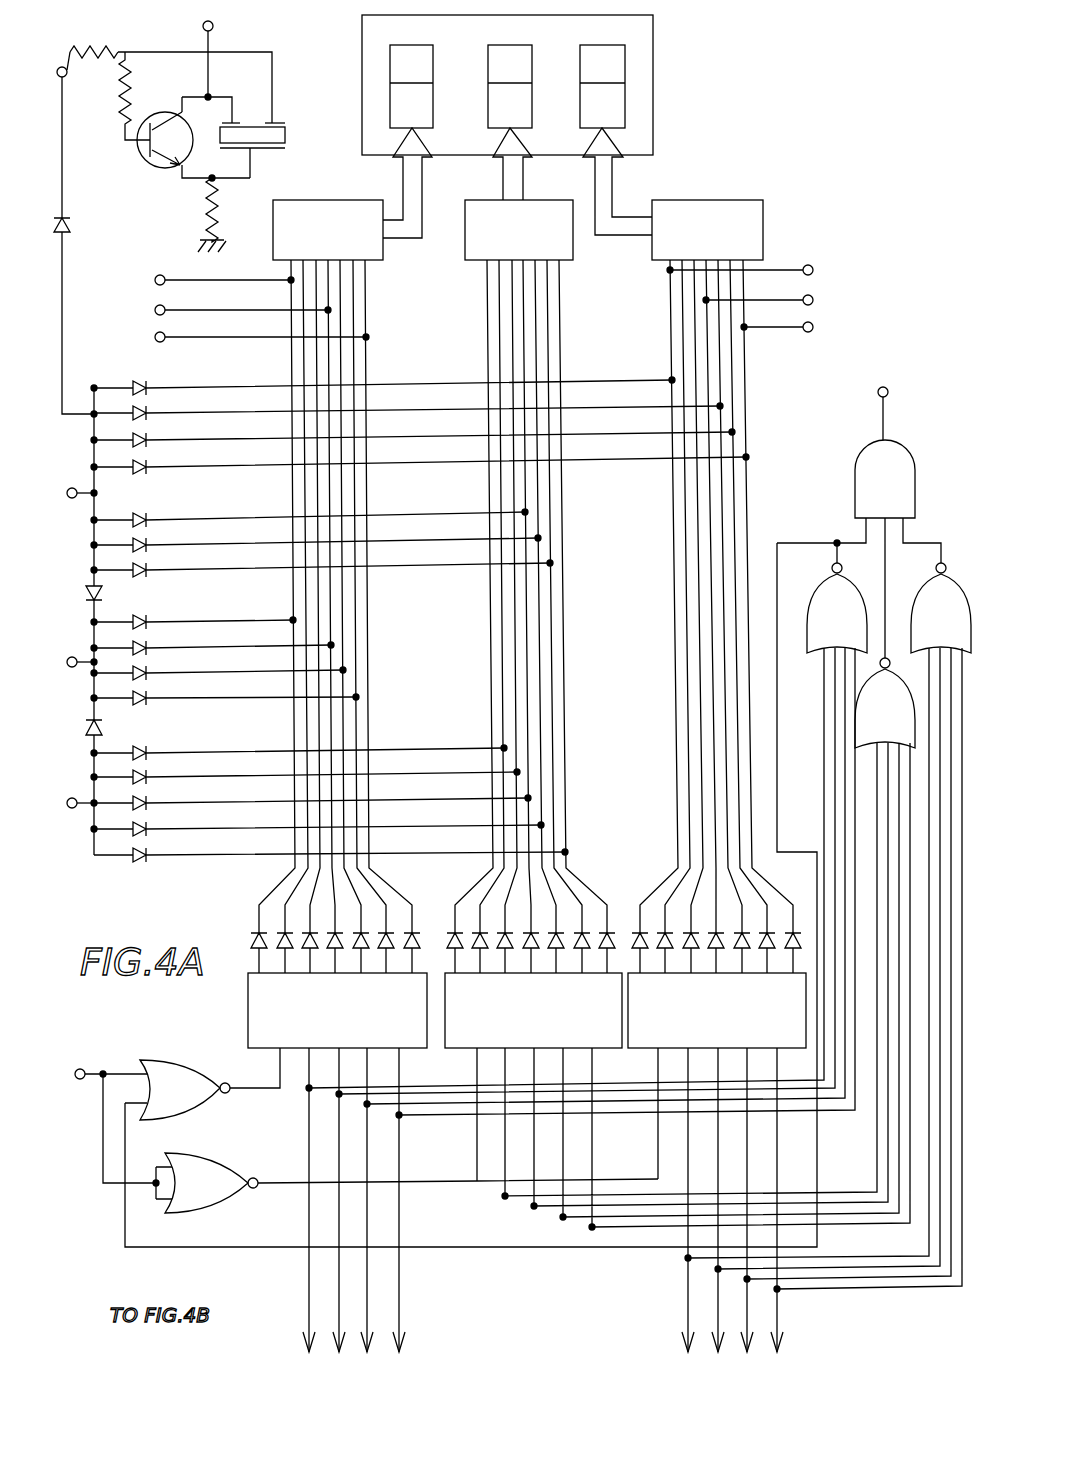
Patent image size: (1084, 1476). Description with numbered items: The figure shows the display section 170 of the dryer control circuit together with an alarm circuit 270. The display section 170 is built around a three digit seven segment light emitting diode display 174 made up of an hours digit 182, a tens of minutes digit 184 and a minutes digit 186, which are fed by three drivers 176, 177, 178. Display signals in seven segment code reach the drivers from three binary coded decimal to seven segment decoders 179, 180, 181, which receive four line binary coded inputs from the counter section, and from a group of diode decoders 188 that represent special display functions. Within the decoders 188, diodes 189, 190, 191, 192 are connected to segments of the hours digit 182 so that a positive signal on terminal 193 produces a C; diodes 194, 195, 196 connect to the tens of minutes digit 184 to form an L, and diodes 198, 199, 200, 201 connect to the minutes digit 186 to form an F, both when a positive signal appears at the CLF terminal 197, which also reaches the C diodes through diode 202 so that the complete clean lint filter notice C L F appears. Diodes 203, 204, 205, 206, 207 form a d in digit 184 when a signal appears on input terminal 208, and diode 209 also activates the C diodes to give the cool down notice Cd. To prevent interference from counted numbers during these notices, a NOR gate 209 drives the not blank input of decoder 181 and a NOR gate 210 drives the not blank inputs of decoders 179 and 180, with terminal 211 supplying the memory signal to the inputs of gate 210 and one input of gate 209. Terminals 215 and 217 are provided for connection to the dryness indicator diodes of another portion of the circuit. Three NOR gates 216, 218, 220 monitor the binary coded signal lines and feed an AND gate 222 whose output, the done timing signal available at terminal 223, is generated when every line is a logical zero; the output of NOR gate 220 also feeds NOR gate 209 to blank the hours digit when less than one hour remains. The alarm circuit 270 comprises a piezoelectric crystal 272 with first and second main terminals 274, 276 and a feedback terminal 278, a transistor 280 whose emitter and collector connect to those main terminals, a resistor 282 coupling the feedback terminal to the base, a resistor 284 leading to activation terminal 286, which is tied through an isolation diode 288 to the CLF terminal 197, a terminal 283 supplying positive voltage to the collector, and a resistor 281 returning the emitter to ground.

The display section 170 is at (626, 507).
The three digit seven segment light emitting diode display 174 is at (654, 119).
The driver 176 is at (716, 208).
The driver 177 is at (492, 212).
The driver 178 is at (336, 210).
The binary coded decimal to seven segment decoder 179 is at (732, 1014).
The binary coded decimal to seven segment decoder 180 is at (549, 1018).
The binary coded decimal to seven segment decoder 181 is at (350, 1019).
The hours digit 182 is at (398, 55).
The tens of minutes digit 184 is at (500, 55).
The minutes digit 186 is at (614, 52).
The decoders 188 is at (86, 573).
The diode 189 is at (146, 618).
The diode 190 is at (146, 644).
The diode 191 is at (146, 669).
The diode 192 is at (146, 694).
The terminal 193 is at (60, 658).
The diode 194 is at (146, 516).
The diode 195 is at (146, 541).
The diode 196 is at (146, 566).
The terminal 197 is at (62, 498).
The diode 198 is at (146, 384).
The diode 199 is at (146, 408).
The diode 200 is at (146, 436).
The diode 201 is at (146, 462).
The diode 202 is at (104, 592).
The diode 203 is at (148, 748).
The diode 204 is at (148, 772).
The diode 205 is at (148, 798).
The diode 206 is at (148, 824).
The diode 207 is at (148, 850).
The input terminal 208 is at (62, 788).
The diode / NOR gate 209 is at (106, 722).
The NOR gate 210 is at (204, 1160).
The terminal 211 is at (78, 1060).
The terminal 215 is at (153, 347).
The NOR gate 216 is at (950, 595).
The terminal 217 is at (812, 338).
The NOR gate 218 is at (907, 731).
The NOR gate 220 is at (830, 598).
The AND gate 222 is at (905, 468).
The terminal 223 is at (885, 386).
The alarm circuit 270 is at (140, 210).
The piezoelectric crystal 272 is at (286, 135).
The first main terminal 274 is at (266, 152).
The second main terminal 276 is at (244, 112).
The feedback terminal 278 is at (280, 116).
The transistor 280 is at (140, 152).
The resistor 281 is at (204, 210).
The resistor 282 is at (118, 92).
The terminal 283 is at (214, 28).
The resistor 284 is at (92, 48).
The terminal 286 is at (68, 72).
The isolation diode 288 is at (72, 226).